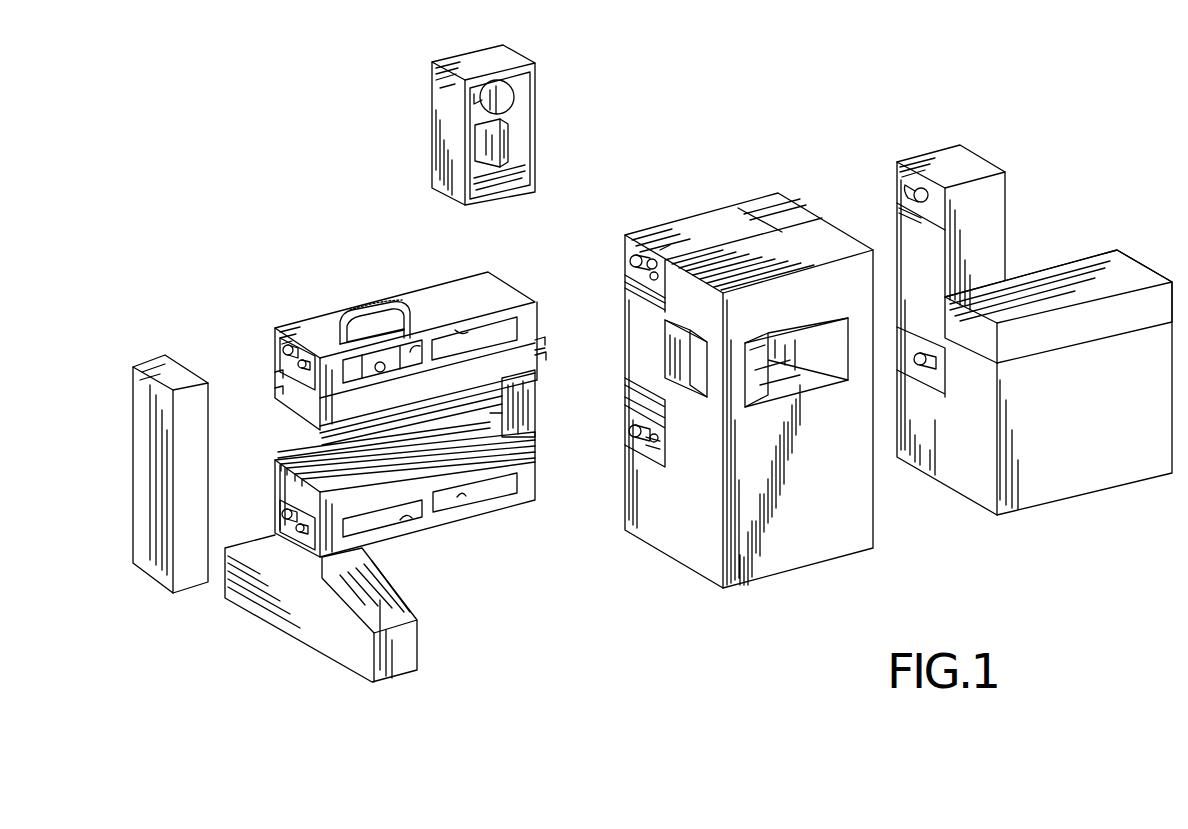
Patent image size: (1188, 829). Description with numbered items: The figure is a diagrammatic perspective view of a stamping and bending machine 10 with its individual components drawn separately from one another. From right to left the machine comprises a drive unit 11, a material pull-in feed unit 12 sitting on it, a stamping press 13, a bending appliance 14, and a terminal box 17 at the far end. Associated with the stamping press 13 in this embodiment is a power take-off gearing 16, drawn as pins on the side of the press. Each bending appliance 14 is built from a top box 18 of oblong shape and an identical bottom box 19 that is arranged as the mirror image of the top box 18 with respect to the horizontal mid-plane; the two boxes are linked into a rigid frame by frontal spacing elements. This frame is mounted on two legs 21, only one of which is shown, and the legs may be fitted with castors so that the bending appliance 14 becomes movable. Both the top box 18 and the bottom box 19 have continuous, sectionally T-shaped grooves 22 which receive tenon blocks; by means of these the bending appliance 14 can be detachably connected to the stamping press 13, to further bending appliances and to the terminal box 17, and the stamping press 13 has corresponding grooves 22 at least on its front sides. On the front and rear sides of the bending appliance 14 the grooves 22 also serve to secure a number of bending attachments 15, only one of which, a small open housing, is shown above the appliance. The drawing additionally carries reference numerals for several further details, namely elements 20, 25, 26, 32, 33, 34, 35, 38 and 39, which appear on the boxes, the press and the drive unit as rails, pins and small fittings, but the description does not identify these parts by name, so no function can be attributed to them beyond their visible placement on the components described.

The stamping and bending machine 10 is at (645, 186).
The drive unit 11 is at (1112, 478).
The material pull-in feed unit 12 is at (1128, 268).
The stamping press 13 is at (804, 555).
The bending appliance 14 is at (548, 345).
The bending attachment 15 is at (510, 53).
The power take-off gearing 16 is at (613, 260).
The terminal box 17 is at (160, 366).
The top box 18 is at (496, 288).
The bottom box 19 is at (532, 480).
The intermediate member 20 is at (530, 393).
The leg 21 is at (300, 640).
The groove 22 is at (277, 390).
The pin 25 is at (922, 366).
The pin 26 is at (914, 191).
The pin 32 is at (648, 250).
The pin 33 is at (667, 251).
The pin 34 is at (283, 347).
The pin 35 is at (305, 360).
The strap 38 is at (378, 330).
The hook 39 is at (460, 330).